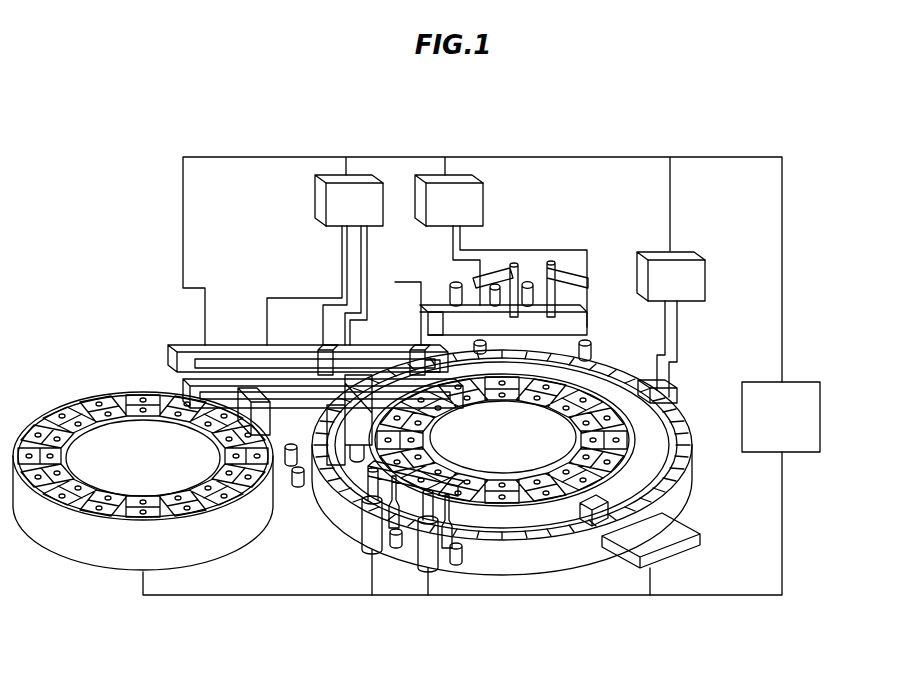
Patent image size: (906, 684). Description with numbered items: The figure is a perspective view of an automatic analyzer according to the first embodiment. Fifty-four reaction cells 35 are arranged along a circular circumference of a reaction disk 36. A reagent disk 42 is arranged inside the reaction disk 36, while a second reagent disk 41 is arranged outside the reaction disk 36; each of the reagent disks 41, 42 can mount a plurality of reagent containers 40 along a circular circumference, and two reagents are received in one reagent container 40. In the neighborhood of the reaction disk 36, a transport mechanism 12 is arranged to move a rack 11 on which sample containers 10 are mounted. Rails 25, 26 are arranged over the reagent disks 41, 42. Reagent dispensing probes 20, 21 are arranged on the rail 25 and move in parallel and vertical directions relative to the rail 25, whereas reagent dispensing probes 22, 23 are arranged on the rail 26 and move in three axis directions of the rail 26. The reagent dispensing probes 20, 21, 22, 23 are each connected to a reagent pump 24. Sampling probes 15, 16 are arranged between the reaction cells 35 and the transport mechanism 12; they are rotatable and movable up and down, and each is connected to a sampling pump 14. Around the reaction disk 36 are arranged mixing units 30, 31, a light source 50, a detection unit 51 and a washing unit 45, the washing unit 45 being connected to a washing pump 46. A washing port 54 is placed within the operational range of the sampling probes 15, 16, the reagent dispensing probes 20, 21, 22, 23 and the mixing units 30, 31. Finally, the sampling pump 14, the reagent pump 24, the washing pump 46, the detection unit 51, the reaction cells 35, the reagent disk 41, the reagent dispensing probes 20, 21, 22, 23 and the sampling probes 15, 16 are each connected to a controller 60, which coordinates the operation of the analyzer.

The sample container 10 is at (446, 304).
The rack 11 is at (450, 290).
The transport mechanism 12 is at (434, 312).
The sampling pump 14 is at (483, 200).
The sampling probe 15 is at (507, 272).
The sampling probe 16 is at (558, 272).
The reagent dispensing probe 20 is at (322, 344).
The reagent dispensing probe 21 is at (414, 352).
The reagent dispensing probe 22 is at (244, 394).
The reagent dispensing probe 23 is at (343, 406).
The reagent pump 24 is at (326, 199).
The rail 25 is at (180, 352).
The rail 26 is at (186, 386).
The mixing unit 30 is at (369, 545).
The mixing unit 31 is at (427, 566).
The reaction cell 35 is at (540, 540).
The reaction disk 36 is at (500, 568).
The reagent container 40 is at (108, 398).
The reagent disk 41 is at (60, 406).
The reagent disk 42 is at (616, 458).
The washing unit 45 is at (677, 392).
The washing pump 46 is at (705, 283).
The light source 50 is at (588, 524).
The detection unit 51 is at (680, 548).
The washing port 54 is at (590, 346).
The controller 60 is at (820, 416).